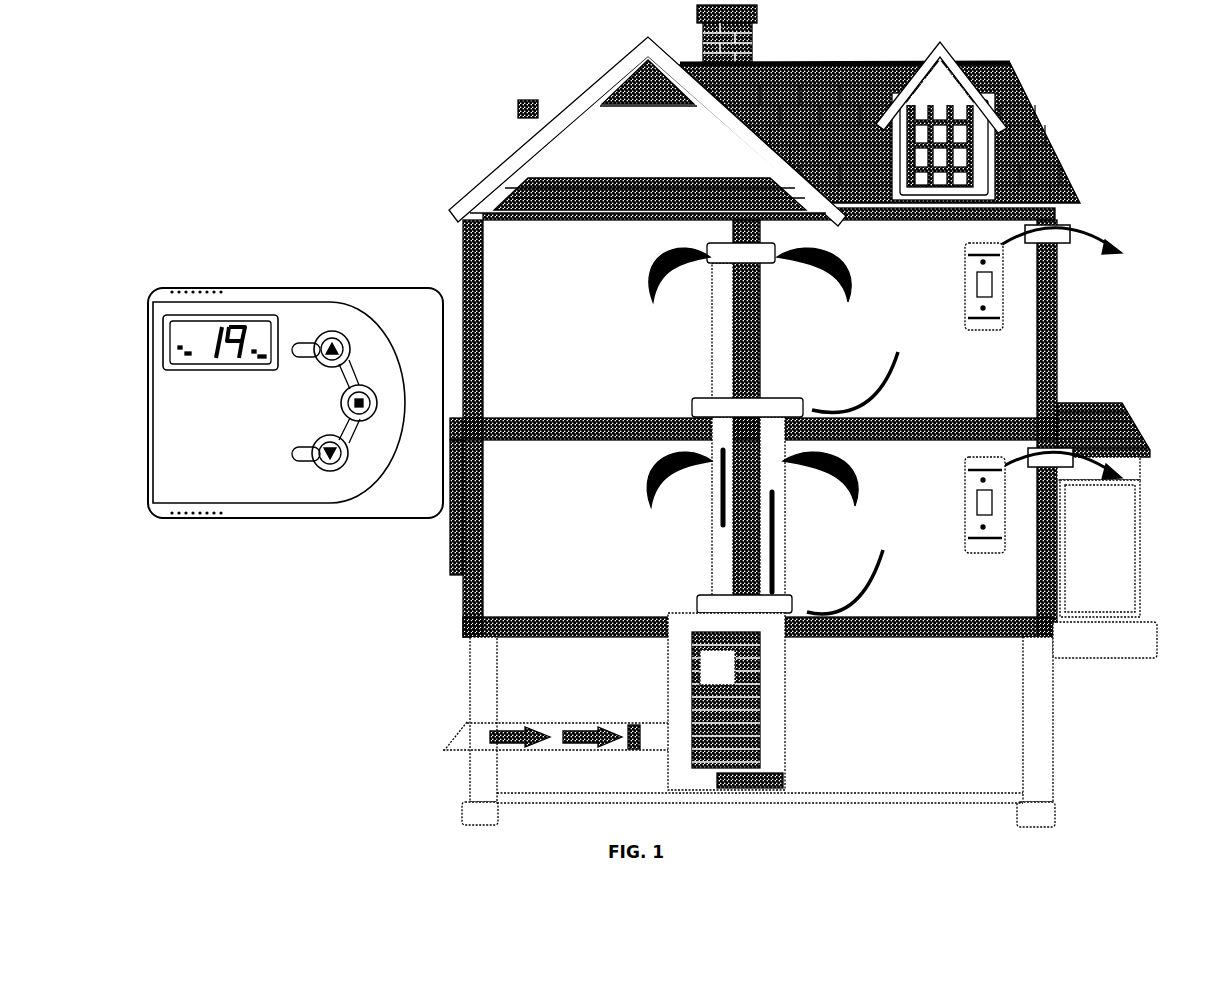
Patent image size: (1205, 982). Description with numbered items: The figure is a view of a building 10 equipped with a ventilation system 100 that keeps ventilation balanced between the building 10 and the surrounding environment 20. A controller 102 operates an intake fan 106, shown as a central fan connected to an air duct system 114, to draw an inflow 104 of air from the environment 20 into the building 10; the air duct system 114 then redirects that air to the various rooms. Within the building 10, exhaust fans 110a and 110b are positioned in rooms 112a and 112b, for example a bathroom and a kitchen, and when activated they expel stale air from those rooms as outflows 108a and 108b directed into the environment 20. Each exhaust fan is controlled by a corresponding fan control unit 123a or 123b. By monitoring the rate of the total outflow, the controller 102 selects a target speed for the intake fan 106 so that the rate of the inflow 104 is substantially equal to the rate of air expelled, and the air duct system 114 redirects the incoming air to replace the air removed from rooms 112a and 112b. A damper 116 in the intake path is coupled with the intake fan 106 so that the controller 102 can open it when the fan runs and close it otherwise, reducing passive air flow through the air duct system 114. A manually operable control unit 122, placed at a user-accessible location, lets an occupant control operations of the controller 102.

The building 10 is at (478, 187).
The environment 20 is at (319, 684).
The ventilation system 100 is at (1110, 152).
The controller 102 is at (710, 769).
The inflow 104 is at (583, 732).
The intake fan 106 is at (710, 741).
The outflow 108a is at (1123, 253).
The outflow 108b is at (1122, 480).
The exhaust fan 110a is at (1037, 245).
The exhaust fan 110b is at (1040, 468).
The room 112a is at (882, 339).
The room 112b is at (889, 534).
The air duct system 114 is at (700, 537).
The damper 116 is at (640, 722).
The manually operable control unit 122 is at (313, 510).
The fan control unit 123a is at (965, 308).
The fan control unit 123b is at (975, 513).